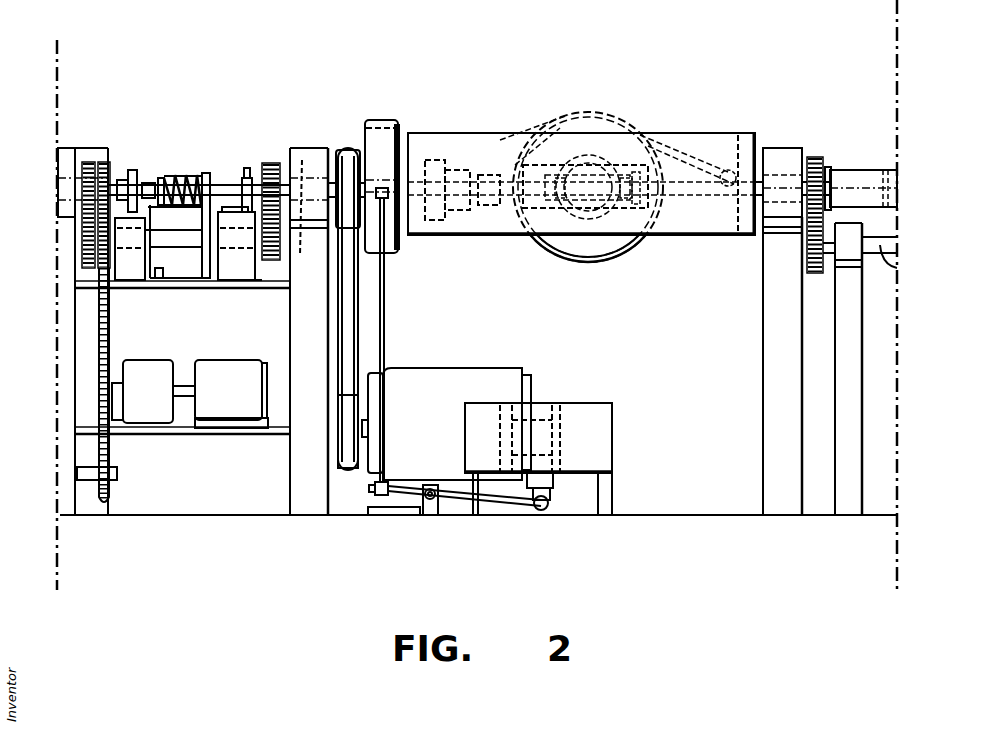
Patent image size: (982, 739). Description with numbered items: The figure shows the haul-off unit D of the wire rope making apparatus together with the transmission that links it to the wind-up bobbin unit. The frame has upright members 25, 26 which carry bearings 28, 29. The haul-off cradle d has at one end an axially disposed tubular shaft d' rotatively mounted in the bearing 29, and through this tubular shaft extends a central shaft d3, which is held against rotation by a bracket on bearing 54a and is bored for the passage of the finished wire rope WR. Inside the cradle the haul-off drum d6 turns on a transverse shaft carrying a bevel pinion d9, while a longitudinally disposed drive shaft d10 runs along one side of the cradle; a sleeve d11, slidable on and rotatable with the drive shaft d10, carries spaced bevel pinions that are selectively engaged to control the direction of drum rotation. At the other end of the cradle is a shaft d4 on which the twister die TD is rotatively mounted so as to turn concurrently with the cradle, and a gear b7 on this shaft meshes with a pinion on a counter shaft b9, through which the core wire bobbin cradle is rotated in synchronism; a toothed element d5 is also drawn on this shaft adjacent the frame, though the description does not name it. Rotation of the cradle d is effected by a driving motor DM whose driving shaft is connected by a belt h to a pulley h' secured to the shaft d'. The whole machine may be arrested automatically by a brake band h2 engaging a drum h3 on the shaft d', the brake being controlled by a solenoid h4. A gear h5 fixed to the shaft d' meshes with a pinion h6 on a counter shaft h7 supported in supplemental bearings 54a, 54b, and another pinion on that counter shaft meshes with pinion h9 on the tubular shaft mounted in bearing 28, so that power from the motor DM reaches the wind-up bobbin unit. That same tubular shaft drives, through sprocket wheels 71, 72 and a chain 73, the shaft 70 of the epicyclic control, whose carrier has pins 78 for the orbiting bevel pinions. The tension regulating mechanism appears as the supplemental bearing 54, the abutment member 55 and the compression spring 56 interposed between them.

The bearing 28 is at (75, 162).
The upright member 25 is at (63, 508).
The upright member 26 is at (308, 508).
The bearing 29 is at (306, 156).
The pinion h9 is at (90, 160).
The sprocket wheel 71 is at (105, 166).
The chain 73 is at (112, 341).
The sprocket wheel 72 is at (108, 488).
The shaft 70 is at (100, 472).
The supplemental bearing 54 is at (206, 174).
The abutment member 55 is at (160, 175).
The compression spring 56 is at (173, 241).
The supplemental bearing 54a is at (128, 282).
The supplemental bearing 54b is at (240, 282).
The counter shaft h7 is at (190, 285).
The pinion h6 is at (275, 284).
The gear h5 is at (270, 162).
The central shaft d3 is at (302, 160).
The tubular shaft d' is at (305, 220).
The belt h is at (373, 309).
The pulley h' is at (346, 168).
The brake band h2 is at (384, 122).
The drum h3 is at (401, 138).
The driving motor DM is at (442, 378).
The solenoid h4 is at (603, 444).
The haul-off unit D is at (729, 127).
The cradle d is at (568, 218).
The haul-off drum d6 is at (598, 130).
The bevel pinion d9 is at (556, 240).
The drive shaft d10 is at (506, 190).
The sleeve d11 is at (612, 236).
The wire rope WR is at (618, 138).
The shaft d4 is at (770, 176).
The pins 78 is at (812, 253).
The gear d5 is at (813, 160).
The gear b7 is at (840, 172).
The twister die TD is at (886, 172).
The counter shaft b9 is at (888, 256).